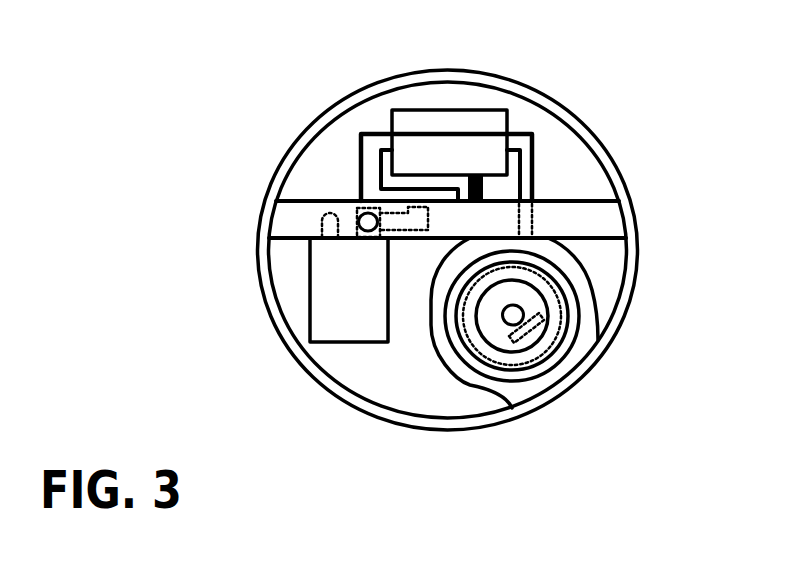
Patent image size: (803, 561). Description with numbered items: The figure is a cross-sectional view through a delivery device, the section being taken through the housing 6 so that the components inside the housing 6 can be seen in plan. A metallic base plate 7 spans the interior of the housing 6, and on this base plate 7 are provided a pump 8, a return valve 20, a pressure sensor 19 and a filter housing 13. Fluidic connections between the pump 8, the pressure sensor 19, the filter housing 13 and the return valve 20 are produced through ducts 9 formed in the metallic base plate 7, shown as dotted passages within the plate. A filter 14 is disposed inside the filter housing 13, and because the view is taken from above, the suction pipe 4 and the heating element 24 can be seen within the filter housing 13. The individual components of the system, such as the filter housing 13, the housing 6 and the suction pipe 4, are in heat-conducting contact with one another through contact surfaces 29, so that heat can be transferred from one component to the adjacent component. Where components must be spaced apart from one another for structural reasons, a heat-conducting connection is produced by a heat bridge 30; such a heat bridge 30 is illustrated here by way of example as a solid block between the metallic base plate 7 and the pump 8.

The suction pipe 4 is at (535, 308).
The housing 6 is at (318, 220).
The metallic base plate 7 is at (605, 240).
The pump 8 is at (507, 122).
The ducts 9 is at (532, 215).
The filter housing 13 is at (470, 383).
The filter 14 is at (547, 355).
The pressure sensor 19 is at (387, 193).
The return valve 20 is at (310, 313).
The heating element 24 is at (535, 330).
The contact surfaces 29 is at (537, 395).
The heat bridge 30 is at (484, 195).